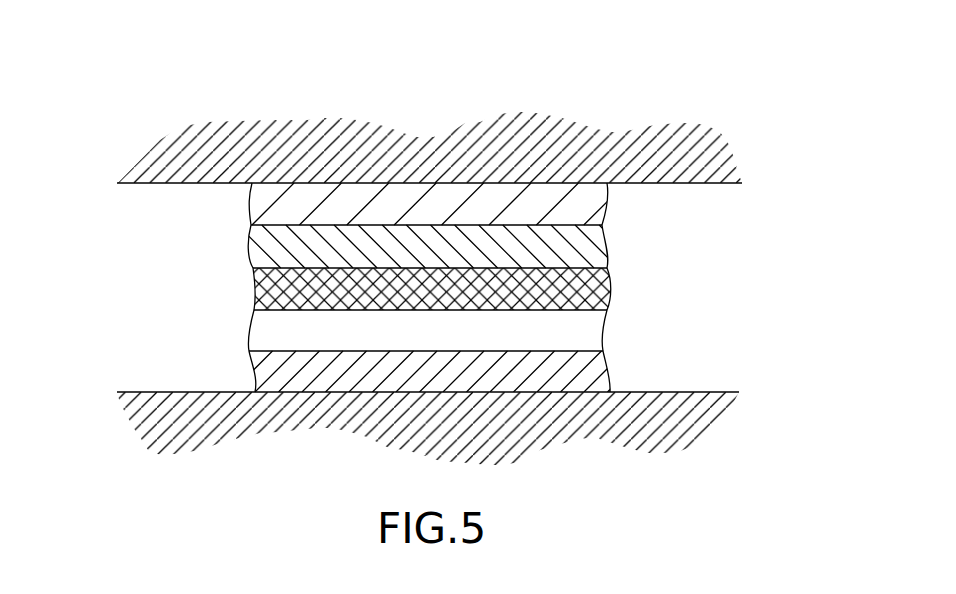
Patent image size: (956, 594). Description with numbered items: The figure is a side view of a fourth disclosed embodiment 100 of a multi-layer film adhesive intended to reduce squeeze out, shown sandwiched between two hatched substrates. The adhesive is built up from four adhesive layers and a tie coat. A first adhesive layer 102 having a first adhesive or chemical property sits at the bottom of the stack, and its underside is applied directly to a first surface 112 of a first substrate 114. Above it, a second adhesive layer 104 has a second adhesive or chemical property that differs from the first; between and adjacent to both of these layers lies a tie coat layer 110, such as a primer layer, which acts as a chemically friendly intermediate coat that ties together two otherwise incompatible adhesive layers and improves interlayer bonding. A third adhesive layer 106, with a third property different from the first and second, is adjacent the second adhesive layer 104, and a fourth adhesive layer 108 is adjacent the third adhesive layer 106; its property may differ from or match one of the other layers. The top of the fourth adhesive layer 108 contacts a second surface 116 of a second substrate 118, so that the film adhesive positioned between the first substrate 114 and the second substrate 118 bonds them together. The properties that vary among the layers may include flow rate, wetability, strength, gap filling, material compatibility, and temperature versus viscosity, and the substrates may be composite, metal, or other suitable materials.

The fourth disclosed embodiment of the multi-layer film adhesive 100 is at (659, 90).
The first adhesive layer 102 is at (585, 363).
The second adhesive layer 104 is at (593, 290).
The third adhesive layer 106 is at (592, 247).
The fourth adhesive layer 108 is at (595, 206).
The tie coat layer 110 is at (590, 329).
The first surface 112 is at (706, 392).
The first substrate 114 is at (682, 413).
The second surface 116 is at (210, 185).
The second substrate 118 is at (210, 130).